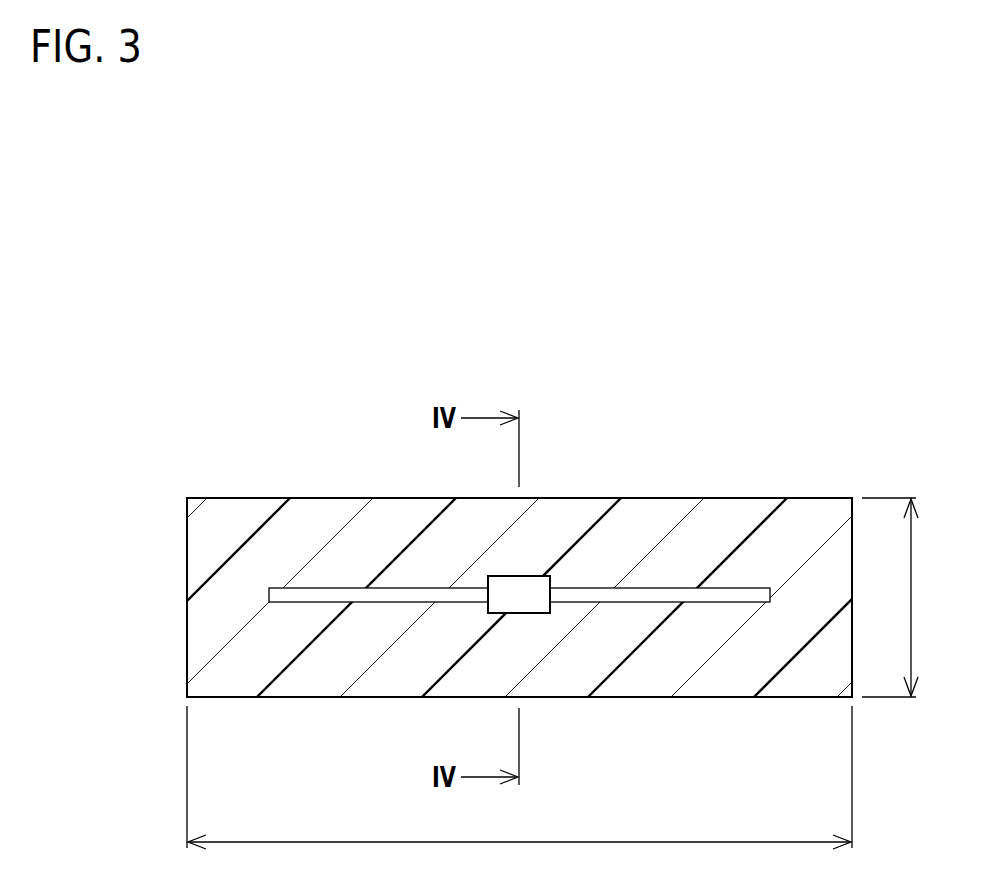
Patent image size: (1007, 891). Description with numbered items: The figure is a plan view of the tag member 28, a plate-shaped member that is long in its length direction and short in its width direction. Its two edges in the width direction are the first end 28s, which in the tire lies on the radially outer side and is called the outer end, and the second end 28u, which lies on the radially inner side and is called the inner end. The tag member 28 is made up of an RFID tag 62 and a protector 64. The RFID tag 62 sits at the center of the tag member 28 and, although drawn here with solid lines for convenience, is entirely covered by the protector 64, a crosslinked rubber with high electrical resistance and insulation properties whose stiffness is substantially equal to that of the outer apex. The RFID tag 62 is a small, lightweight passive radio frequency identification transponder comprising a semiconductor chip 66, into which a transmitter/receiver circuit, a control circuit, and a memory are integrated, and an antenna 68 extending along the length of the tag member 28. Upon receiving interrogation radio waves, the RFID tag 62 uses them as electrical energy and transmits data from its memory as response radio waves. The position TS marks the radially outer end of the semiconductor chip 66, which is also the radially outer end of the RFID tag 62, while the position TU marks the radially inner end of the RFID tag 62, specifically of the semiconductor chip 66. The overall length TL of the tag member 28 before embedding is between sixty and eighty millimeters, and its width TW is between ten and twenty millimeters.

The tag member 28 is at (597, 596).
The first end 28s is at (247, 497).
The second end 28u is at (247, 699).
The RFID tag 62 is at (535, 573).
The protector 64 is at (326, 522).
The semiconductor chip 66 is at (535, 613).
The antenna 68 is at (708, 602).
The radially outer end of the semiconductor chip TS is at (505, 576).
The radially inner end of the RFID tag TU is at (517, 613).
The length of the tag member TL is at (519, 795).
The width of the tag member TW is at (906, 597).